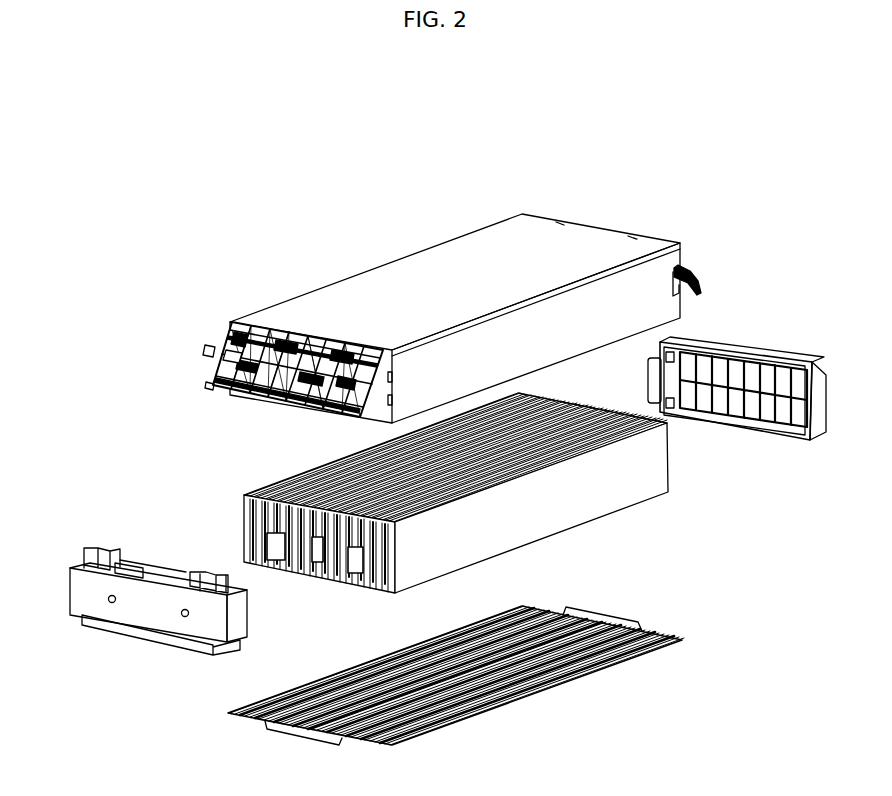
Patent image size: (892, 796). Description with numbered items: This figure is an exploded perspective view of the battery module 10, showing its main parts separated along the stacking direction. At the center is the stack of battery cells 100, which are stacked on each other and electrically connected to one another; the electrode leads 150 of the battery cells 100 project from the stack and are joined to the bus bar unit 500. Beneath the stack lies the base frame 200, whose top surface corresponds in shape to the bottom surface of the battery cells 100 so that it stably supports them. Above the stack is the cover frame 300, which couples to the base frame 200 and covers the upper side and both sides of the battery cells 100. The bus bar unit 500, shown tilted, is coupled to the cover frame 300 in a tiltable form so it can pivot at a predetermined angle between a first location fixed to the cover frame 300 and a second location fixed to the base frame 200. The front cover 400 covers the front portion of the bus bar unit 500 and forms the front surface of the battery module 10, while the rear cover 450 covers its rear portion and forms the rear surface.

The battery module 10 is at (207, 140).
The battery cell 100 is at (298, 468).
The electrode lead 150 is at (268, 545).
The base frame 200 is at (333, 667).
The cover frame 300 is at (420, 245).
The front cover 400 is at (82, 545).
The rear cover 450 is at (757, 340).
The bus bar unit 500 is at (215, 357).